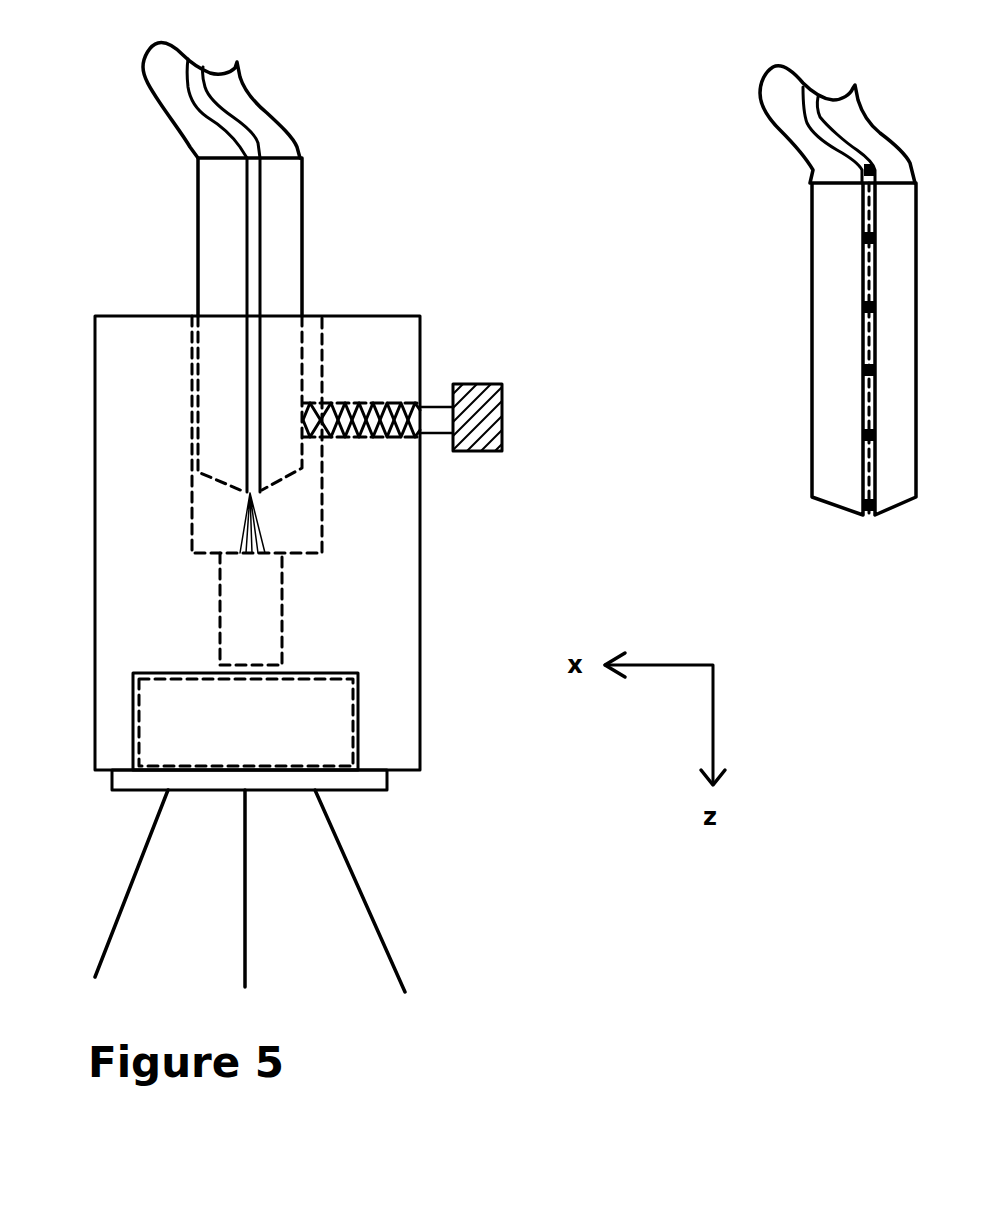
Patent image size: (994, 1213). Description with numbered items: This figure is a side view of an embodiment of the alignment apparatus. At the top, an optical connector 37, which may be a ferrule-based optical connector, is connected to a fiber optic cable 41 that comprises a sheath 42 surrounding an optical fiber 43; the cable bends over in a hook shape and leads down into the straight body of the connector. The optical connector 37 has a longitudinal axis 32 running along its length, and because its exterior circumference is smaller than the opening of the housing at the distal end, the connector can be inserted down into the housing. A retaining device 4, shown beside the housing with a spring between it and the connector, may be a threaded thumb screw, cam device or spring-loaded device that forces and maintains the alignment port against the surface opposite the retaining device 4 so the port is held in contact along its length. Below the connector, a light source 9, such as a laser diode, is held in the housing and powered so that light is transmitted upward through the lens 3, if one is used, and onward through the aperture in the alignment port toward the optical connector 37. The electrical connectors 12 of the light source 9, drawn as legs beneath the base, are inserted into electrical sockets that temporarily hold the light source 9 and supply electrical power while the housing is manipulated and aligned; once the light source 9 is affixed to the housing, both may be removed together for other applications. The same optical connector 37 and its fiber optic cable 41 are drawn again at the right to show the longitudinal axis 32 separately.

The lens 3 is at (267, 607).
The retaining device 4 is at (467, 384).
The light source 9 is at (328, 723).
The electrical connectors 12 is at (147, 860).
The longitudinal axis 32 is at (860, 174).
The optical connector 37 is at (302, 238).
The fiber optic cable 41 is at (300, 133).
The sheath 42 is at (210, 147).
The optical fiber 43 is at (212, 102).